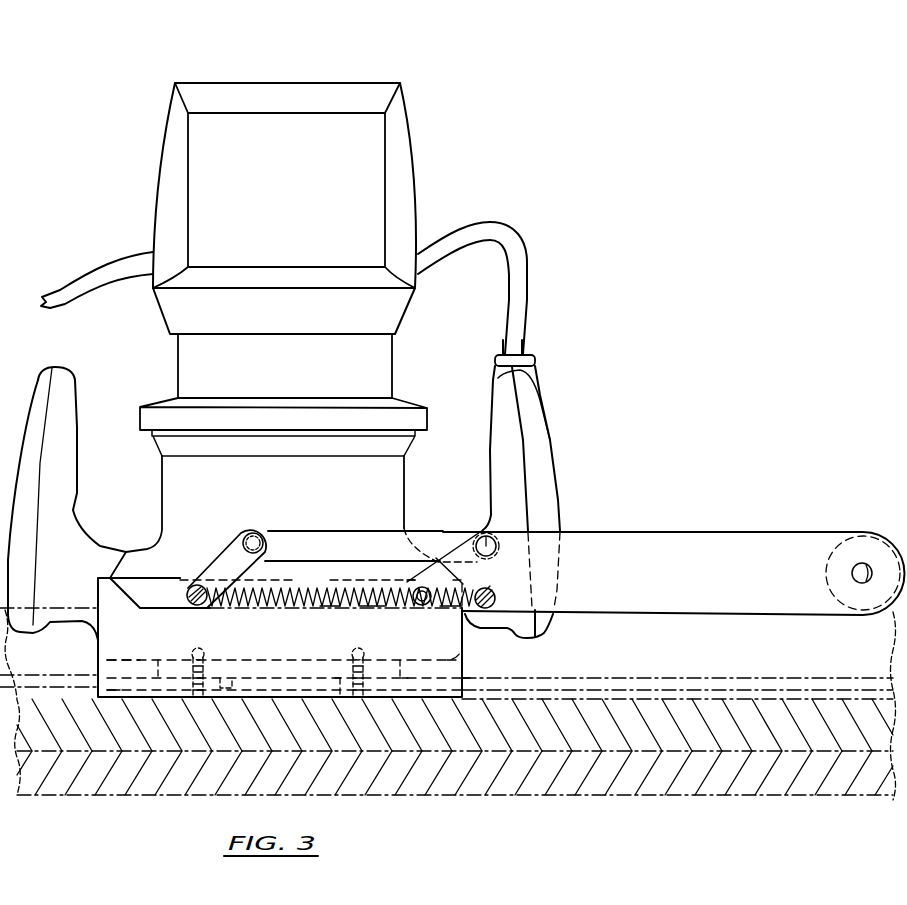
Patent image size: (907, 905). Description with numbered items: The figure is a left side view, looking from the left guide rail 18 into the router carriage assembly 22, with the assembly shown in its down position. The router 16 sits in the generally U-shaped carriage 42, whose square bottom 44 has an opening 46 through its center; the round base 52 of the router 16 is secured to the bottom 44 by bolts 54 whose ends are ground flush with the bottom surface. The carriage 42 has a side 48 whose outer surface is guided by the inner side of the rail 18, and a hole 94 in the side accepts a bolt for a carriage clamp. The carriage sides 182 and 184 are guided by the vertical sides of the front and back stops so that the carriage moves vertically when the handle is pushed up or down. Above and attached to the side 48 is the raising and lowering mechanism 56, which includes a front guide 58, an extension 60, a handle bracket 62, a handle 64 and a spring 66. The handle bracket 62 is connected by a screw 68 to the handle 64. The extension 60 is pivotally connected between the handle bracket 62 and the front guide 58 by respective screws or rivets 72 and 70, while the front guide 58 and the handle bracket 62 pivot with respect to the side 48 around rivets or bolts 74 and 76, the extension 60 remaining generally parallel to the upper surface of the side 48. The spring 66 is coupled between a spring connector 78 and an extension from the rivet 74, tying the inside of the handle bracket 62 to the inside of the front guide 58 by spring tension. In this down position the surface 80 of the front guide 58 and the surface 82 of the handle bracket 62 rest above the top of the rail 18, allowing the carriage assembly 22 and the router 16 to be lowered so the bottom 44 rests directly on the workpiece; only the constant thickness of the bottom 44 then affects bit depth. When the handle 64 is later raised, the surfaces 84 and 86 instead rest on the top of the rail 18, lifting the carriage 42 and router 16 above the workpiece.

The router 16 is at (293, 103).
The left guide rail 18 is at (826, 664).
The router carriage assembly 22 is at (470, 494).
The carriage 42 is at (96, 641).
The bottom 44 is at (133, 700).
The opening 46 is at (232, 672).
The side 48 is at (462, 645).
The base 52 is at (118, 656).
The bolts 54 is at (198, 650).
The raising and lowering mechanism 56 is at (673, 545).
The front guide 58 is at (222, 557).
The extension 60 is at (366, 531).
The handle bracket 62 is at (644, 524).
The handle 64 is at (833, 548).
The spring 66 is at (328, 610).
The screw 68 is at (855, 578).
The screw or rivet 70 is at (254, 538).
The screw or rivet 72 is at (488, 537).
The rivet or bolt 74 is at (183, 610).
The rivet or bolt 76 is at (425, 612).
The spring connector 78 is at (494, 591).
The surface 80 is at (158, 612).
The surface 82 is at (421, 610).
The surface 84 is at (117, 578).
The surface 86 is at (352, 611).
The hole 94 is at (329, 588).
The side 182 is at (465, 673).
The side 184 is at (97, 660).